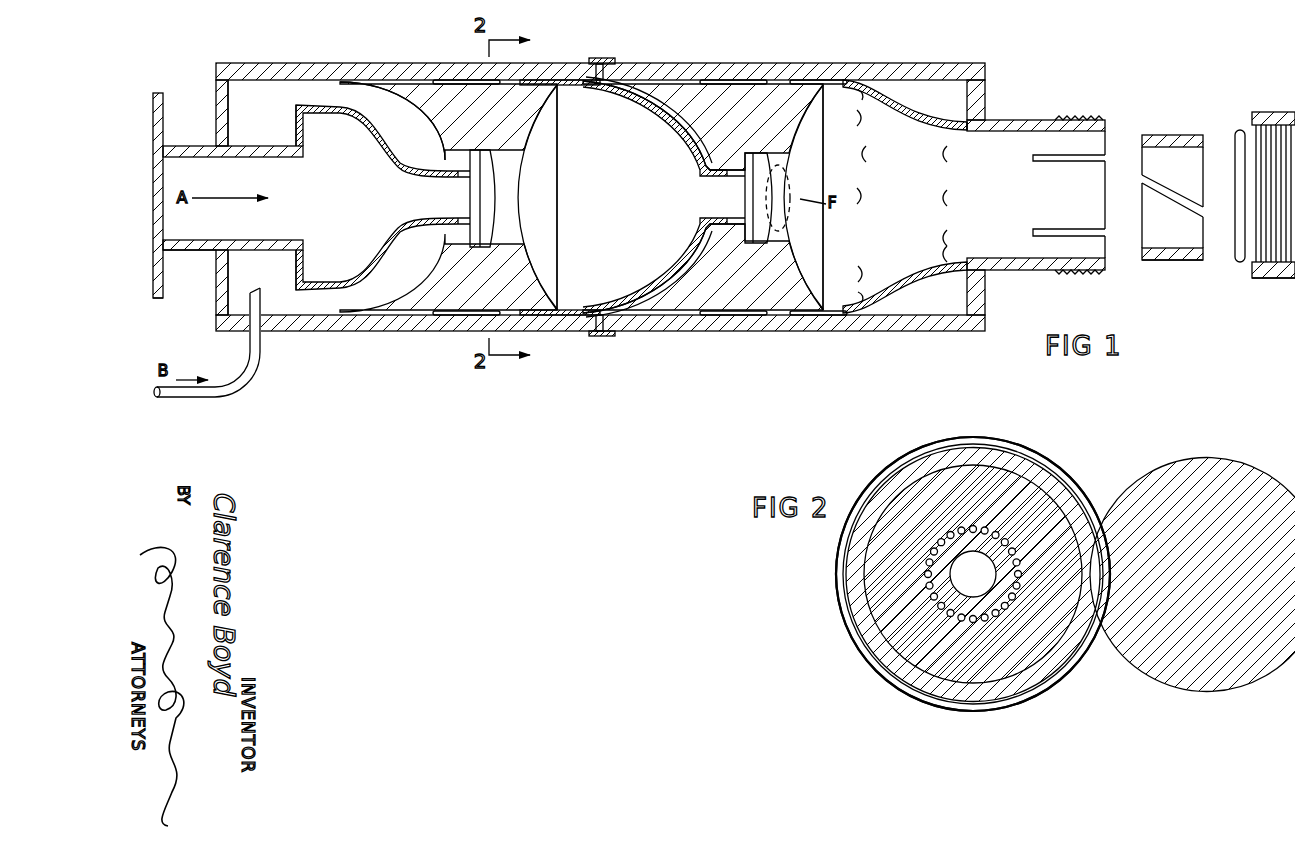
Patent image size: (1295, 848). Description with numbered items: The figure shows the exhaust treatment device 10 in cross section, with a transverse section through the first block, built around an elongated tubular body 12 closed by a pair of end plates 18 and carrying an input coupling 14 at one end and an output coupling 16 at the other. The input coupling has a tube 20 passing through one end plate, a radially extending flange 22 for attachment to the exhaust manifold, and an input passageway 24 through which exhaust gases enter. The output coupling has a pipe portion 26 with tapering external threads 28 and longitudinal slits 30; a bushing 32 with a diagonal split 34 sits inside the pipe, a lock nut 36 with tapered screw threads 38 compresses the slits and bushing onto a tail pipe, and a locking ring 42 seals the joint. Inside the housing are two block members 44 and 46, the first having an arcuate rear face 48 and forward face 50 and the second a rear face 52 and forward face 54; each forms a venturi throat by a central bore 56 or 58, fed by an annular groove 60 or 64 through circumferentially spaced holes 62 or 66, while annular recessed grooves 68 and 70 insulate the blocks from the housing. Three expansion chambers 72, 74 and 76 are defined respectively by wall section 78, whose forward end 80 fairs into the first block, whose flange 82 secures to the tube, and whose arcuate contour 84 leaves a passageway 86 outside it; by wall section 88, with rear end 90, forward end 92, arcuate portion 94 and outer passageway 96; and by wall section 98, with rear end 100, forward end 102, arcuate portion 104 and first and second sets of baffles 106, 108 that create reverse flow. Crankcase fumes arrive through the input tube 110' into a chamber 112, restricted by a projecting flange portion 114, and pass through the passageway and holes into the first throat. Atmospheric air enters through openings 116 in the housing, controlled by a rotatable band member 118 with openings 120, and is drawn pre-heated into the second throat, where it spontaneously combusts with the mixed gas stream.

In FIG. 1, the device 10 is at (573, 50).
In FIG. 1, the tubular body 12 is at (905, 63).
In FIG. 2, the tubular body 12 is at (1086, 518).
In FIG. 1, the input coupling 14 is at (148, 135).
In FIG. 1, the output coupling 16 is at (1142, 128).
In FIG. 1, the end plates 18 is at (218, 112).
In FIG. 1, the tube 20 is at (208, 252).
In FIG. 1, the radially extending flange 22 is at (160, 300).
In FIG. 1, the input passageway 24 is at (245, 158).
In FIG. 1, the pipe portion 26 is at (1044, 268).
In FIG. 1, the external threads 28 is at (1095, 270).
In FIG. 1, the longitudinal slits 30 is at (1087, 228).
In FIG. 1, the bushing 32 is at (1170, 262).
In FIG. 1, the diagonal split 34 is at (1172, 200).
In FIG. 1, the lock nut 36 is at (1290, 112).
In FIG. 1, the tapered screw threads 38 is at (1268, 280).
In FIG. 1, the locking ring 42 is at (1233, 130).
In FIG. 1, the block member 44 is at (452, 298).
In FIG. 2, the block member 44 is at (1053, 628).
In FIG. 1, the block member 46 is at (758, 300).
In FIG. 1, the rear face 48 is at (427, 108).
In FIG. 1, the forward face 50 is at (548, 110).
In FIG. 1, the rear face 52 is at (690, 120).
In FIG. 1, the forward face 54 is at (812, 125).
In FIG. 1, the central bore 56 is at (521, 204).
In FIG. 2, the central bore 56 is at (973, 574).
In FIG. 1, the central bore 58 is at (790, 226).
In FIG. 1, the annular groove 60 is at (492, 165).
In FIG. 2, the holes 62 is at (1014, 586).
In FIG. 1, the annular groove 64 is at (789, 198).
In FIG. 1, the holes 66 is at (722, 150).
In FIG. 1, the annular recessed groove 68 is at (465, 80).
In FIG. 2, the annular recessed groove 68 is at (1087, 555).
In FIG. 1, the annular recessed groove 70 is at (730, 78).
In FIG. 1, the expansion chamber 72 is at (377, 197).
In FIG. 1, the expansion chamber 74 is at (655, 197).
In FIG. 1, the expansion chamber 76 is at (865, 197).
In FIG. 1, the wall section 78 is at (378, 145).
In FIG. 1, the forward end 80 is at (456, 178).
In FIG. 1, the flange 82 is at (305, 262).
In FIG. 1, the arcuate contour 84 is at (378, 250).
In FIG. 1, the passageway 86 is at (368, 300).
In FIG. 1, the wall section 88 is at (650, 120).
In FIG. 1, the rear end 90 is at (590, 86).
In FIG. 1, the forward end 92 is at (726, 173).
In FIG. 1, the arcuate portion 94 is at (646, 287).
In FIG. 1, the passageway 96 is at (672, 275).
In FIG. 1, the wall section 98 is at (898, 118).
In FIG. 1, the rear end 100 is at (833, 308).
In FIG. 1, the forward end 102 is at (985, 143).
In FIG. 1, the arcuate portion 104 is at (946, 258).
In FIG. 1, the first set of baffles 106 is at (868, 196).
In FIG. 1, the second set of baffles 108 is at (953, 197).
In FIG. 1, the input tube 110' is at (227, 342).
In FIG. 1, the chamber 112 is at (262, 113).
In FIG. 1, the projecting flange portion 114 is at (300, 104).
In FIG. 1, the openings 116 is at (604, 70).
In FIG. 1, the rotatable band member 118 is at (602, 58).
In FIG. 2, the rotatable band member 118 is at (1070, 483).
In FIG. 1, the openings 120 is at (606, 334).